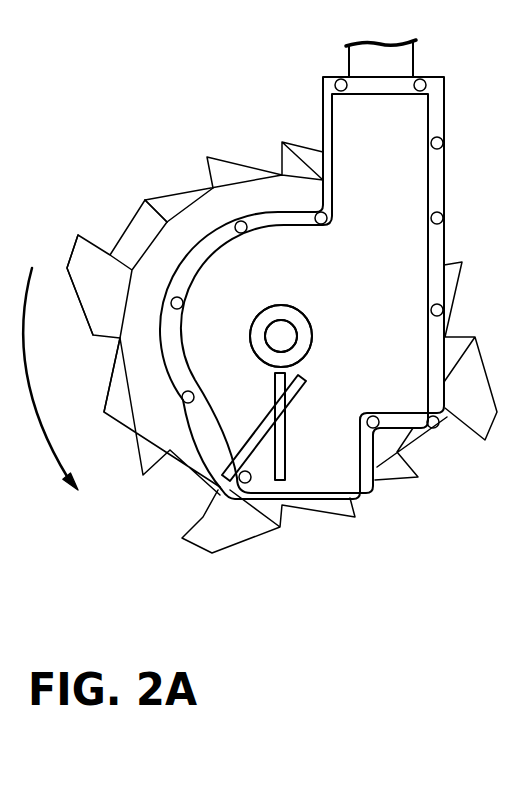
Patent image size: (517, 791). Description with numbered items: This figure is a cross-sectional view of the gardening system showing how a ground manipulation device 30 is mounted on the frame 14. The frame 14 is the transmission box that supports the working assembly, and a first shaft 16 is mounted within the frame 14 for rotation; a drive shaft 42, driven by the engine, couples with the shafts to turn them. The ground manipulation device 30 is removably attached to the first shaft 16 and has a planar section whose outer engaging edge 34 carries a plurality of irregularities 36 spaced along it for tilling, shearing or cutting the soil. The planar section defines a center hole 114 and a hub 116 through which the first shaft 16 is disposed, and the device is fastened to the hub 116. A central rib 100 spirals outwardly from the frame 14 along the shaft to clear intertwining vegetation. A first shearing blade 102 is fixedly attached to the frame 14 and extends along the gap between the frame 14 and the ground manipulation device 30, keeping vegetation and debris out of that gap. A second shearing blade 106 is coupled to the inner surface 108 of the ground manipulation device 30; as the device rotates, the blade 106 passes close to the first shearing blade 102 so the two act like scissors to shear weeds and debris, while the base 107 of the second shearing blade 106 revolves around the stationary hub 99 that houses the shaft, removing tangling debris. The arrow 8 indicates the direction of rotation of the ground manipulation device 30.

The direction of blade rotation 8 is at (50, 383).
The frame 14 is at (405, 128).
The first shaft 16 is at (277, 332).
The ground manipulation device 30 is at (220, 210).
The outer engaging edge 34 is at (92, 277).
The irregularities 36 is at (120, 385).
The drive shaft 42 is at (400, 57).
The stationary hub 99 is at (305, 313).
The central rib 100 is at (277, 305).
The first shearing blade 102 is at (288, 452).
The second shearing blade 106 is at (310, 388).
The base 107 is at (310, 348).
The inner surface 108 is at (187, 228).
The center hole 114 is at (273, 330).
The hub 116 is at (307, 332).